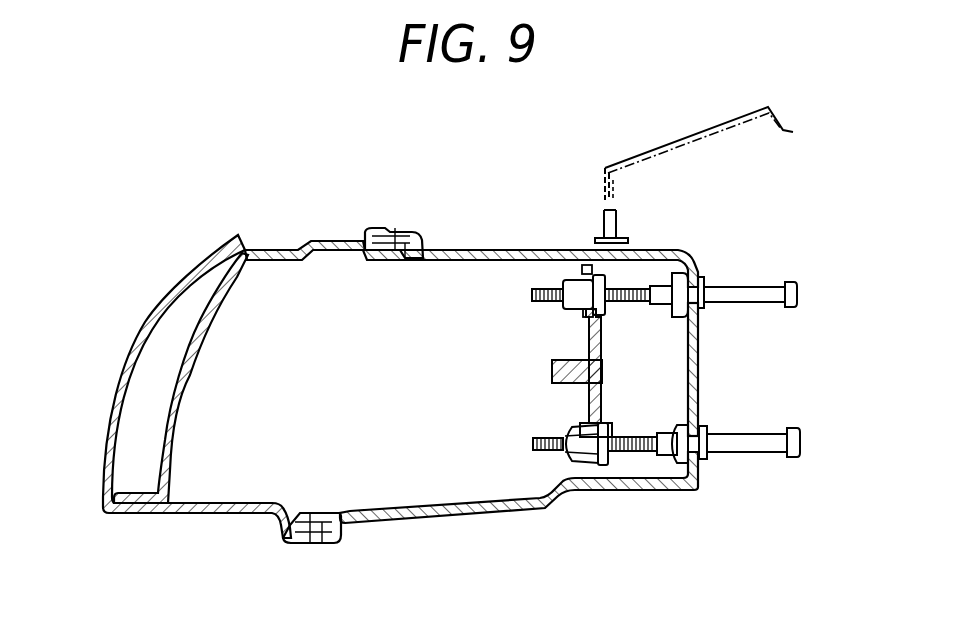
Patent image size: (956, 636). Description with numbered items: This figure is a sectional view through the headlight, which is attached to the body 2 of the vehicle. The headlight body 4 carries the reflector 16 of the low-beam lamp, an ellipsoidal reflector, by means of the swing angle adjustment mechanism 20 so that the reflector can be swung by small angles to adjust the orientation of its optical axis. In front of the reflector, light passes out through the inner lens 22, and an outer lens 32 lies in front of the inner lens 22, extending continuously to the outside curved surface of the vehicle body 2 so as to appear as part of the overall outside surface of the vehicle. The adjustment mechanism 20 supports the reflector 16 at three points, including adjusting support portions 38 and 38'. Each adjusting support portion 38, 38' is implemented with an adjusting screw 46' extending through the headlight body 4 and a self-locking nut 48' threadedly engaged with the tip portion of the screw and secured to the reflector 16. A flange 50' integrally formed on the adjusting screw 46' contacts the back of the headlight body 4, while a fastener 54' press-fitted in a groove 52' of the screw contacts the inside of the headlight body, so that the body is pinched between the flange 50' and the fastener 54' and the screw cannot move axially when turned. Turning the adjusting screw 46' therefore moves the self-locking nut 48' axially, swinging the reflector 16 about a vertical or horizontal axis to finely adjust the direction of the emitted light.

The body of the vehicle 2 is at (633, 153).
The headlight body 4 is at (693, 395).
The reflector 16 is at (587, 343).
The swing angle adjustment mechanism 20 is at (796, 266).
The inner lens 22 is at (199, 380).
The outer lens 32 is at (122, 380).
The adjusting support portion 38 is at (618, 243).
The adjusting support portion 38' is at (658, 401).
The adjusting screw 46' is at (752, 375).
The self-locking nut 48' is at (534, 414).
The flange 50' is at (737, 424).
The groove 52' is at (642, 429).
The fastener 54' is at (674, 419).